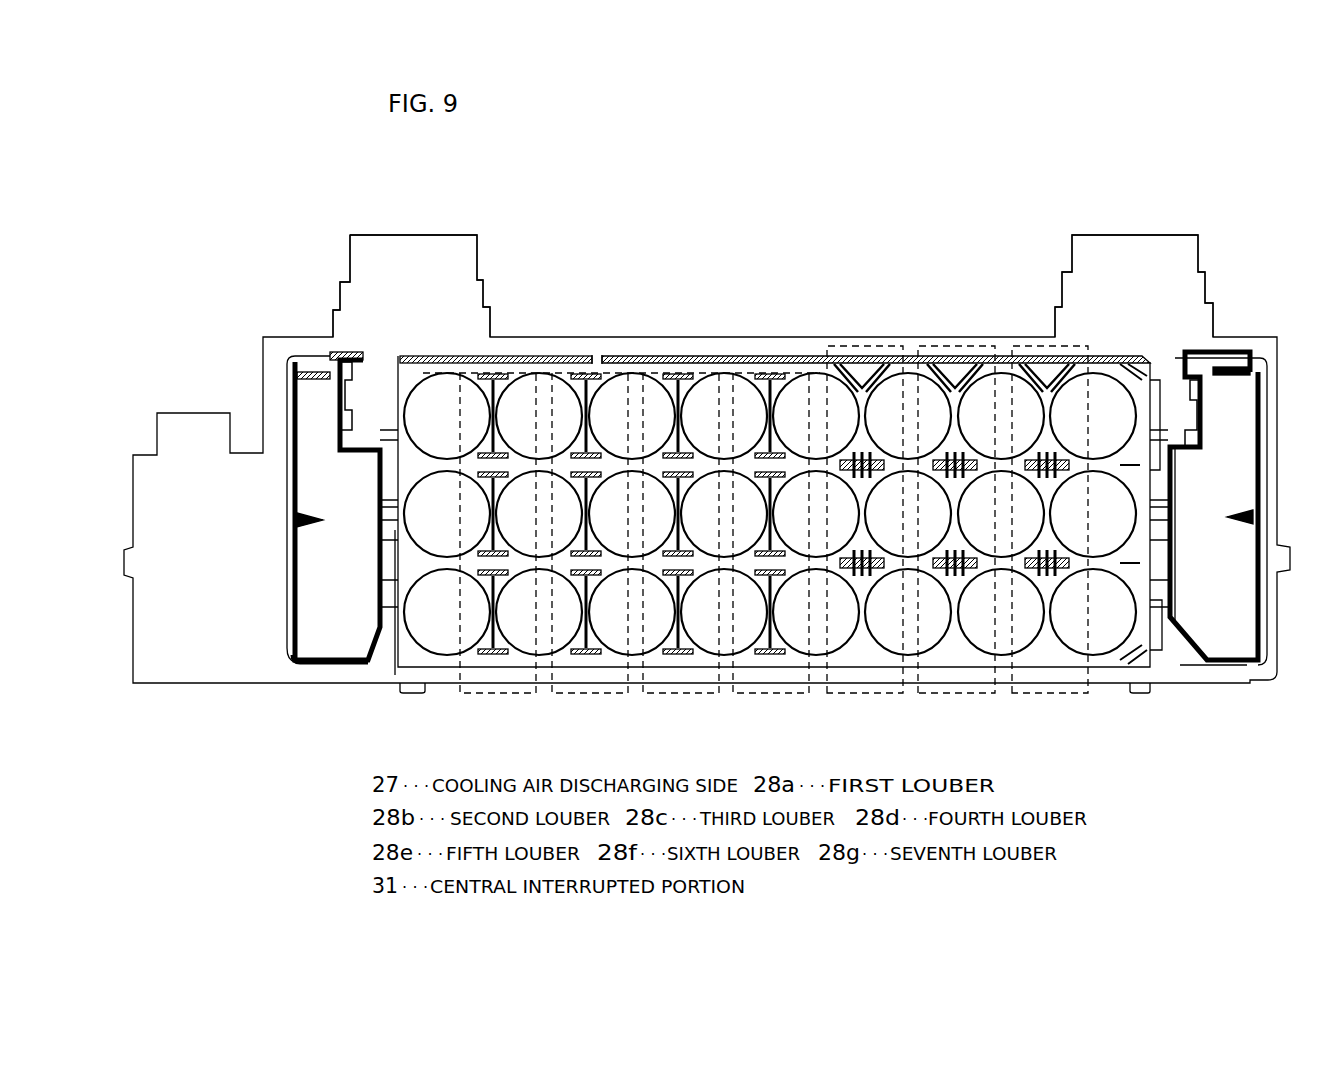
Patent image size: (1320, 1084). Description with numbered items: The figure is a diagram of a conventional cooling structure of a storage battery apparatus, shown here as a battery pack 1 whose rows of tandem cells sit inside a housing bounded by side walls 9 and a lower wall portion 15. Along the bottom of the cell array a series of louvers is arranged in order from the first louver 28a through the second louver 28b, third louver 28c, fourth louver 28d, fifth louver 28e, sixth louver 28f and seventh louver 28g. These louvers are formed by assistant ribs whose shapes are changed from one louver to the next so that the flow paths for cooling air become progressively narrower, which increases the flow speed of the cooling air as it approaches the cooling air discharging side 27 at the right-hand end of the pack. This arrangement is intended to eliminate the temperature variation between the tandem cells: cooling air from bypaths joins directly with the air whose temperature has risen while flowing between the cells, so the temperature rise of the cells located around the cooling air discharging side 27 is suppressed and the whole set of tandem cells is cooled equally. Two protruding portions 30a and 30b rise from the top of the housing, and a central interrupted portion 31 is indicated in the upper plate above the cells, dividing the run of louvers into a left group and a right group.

The battery pack 1 is at (723, 357).
The side wall 9 is at (288, 402).
The lower wall portion 15 is at (410, 562).
The cooling air discharging side 27 is at (1162, 437).
The first louver 28a is at (498, 548).
The second louver 28b is at (590, 548).
The third louver 28c is at (681, 548).
The fourth louver 28d is at (771, 548).
The fifth louver 28e is at (865, 534).
The sixth louver 28f is at (956, 534).
The seventh louver 28g is at (1050, 534).
The first protruding portion 30a is at (487, 297).
The second protruding portion 30b is at (1068, 292).
The central interrupted portion 31 is at (597, 395).